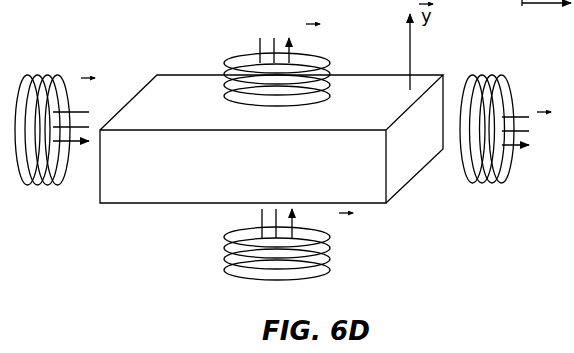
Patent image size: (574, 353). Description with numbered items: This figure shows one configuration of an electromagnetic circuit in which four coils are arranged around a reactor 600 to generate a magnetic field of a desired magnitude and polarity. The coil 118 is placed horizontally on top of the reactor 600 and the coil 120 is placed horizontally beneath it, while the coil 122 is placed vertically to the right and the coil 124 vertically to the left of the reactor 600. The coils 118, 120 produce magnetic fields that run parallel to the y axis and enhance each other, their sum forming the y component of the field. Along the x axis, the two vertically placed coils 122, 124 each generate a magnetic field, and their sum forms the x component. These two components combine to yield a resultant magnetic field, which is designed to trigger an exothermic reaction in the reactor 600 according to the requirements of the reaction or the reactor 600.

The reactor 600 is at (271, 139).
The coil 118 is at (291, 75).
The coil 120 is at (297, 244).
The coil 122 is at (508, 143).
The coil 124 is at (58, 143).